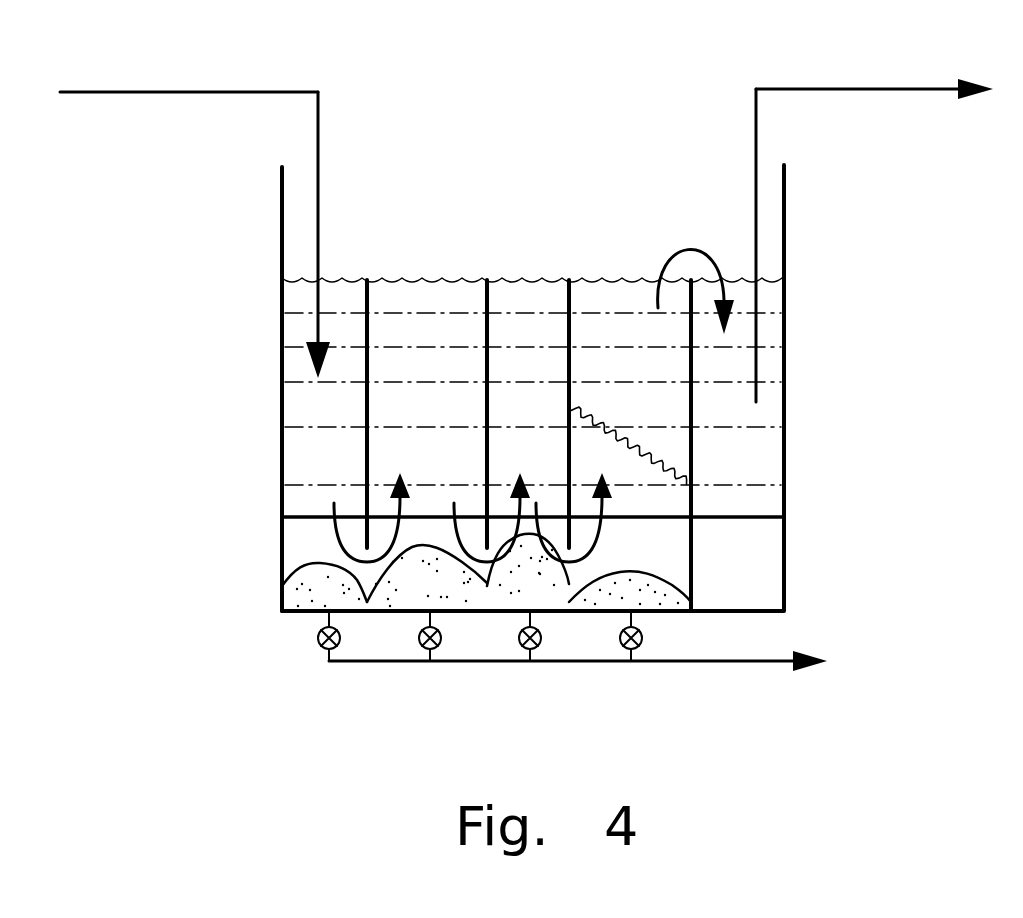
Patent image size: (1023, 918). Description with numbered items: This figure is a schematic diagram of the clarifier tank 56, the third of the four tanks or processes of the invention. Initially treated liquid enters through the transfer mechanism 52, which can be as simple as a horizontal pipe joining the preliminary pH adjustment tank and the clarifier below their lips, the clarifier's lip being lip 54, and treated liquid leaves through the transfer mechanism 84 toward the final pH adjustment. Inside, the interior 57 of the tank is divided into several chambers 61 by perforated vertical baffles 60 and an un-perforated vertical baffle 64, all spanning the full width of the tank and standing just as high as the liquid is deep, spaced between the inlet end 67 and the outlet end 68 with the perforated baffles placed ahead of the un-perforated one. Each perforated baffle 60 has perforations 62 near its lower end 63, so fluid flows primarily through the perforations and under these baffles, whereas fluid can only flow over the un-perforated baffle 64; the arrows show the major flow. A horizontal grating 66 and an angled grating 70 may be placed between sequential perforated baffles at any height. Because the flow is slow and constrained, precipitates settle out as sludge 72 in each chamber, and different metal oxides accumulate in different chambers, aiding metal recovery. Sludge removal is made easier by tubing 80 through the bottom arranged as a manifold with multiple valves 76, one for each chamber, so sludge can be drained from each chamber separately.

The transfer mechanism 52 is at (184, 91).
The lip 54 is at (280, 206).
The clarifier tank 56 is at (478, 86).
The interior 57 is at (283, 247).
The perforated vertical baffle 60 is at (367, 358).
The chamber 61 is at (343, 328).
The perforations 62 is at (372, 574).
The lower end 63 is at (366, 537).
The un-perforated vertical baffle 64 is at (688, 333).
The horizontal grating 66 is at (525, 278).
The inlet end 67 is at (282, 403).
The outlet end 68 is at (786, 403).
The angled grating 70 is at (650, 452).
The sludge 72 is at (413, 590).
The valve 76 is at (318, 641).
The tubing 80 is at (703, 662).
The transfer mechanism 84 is at (840, 89).